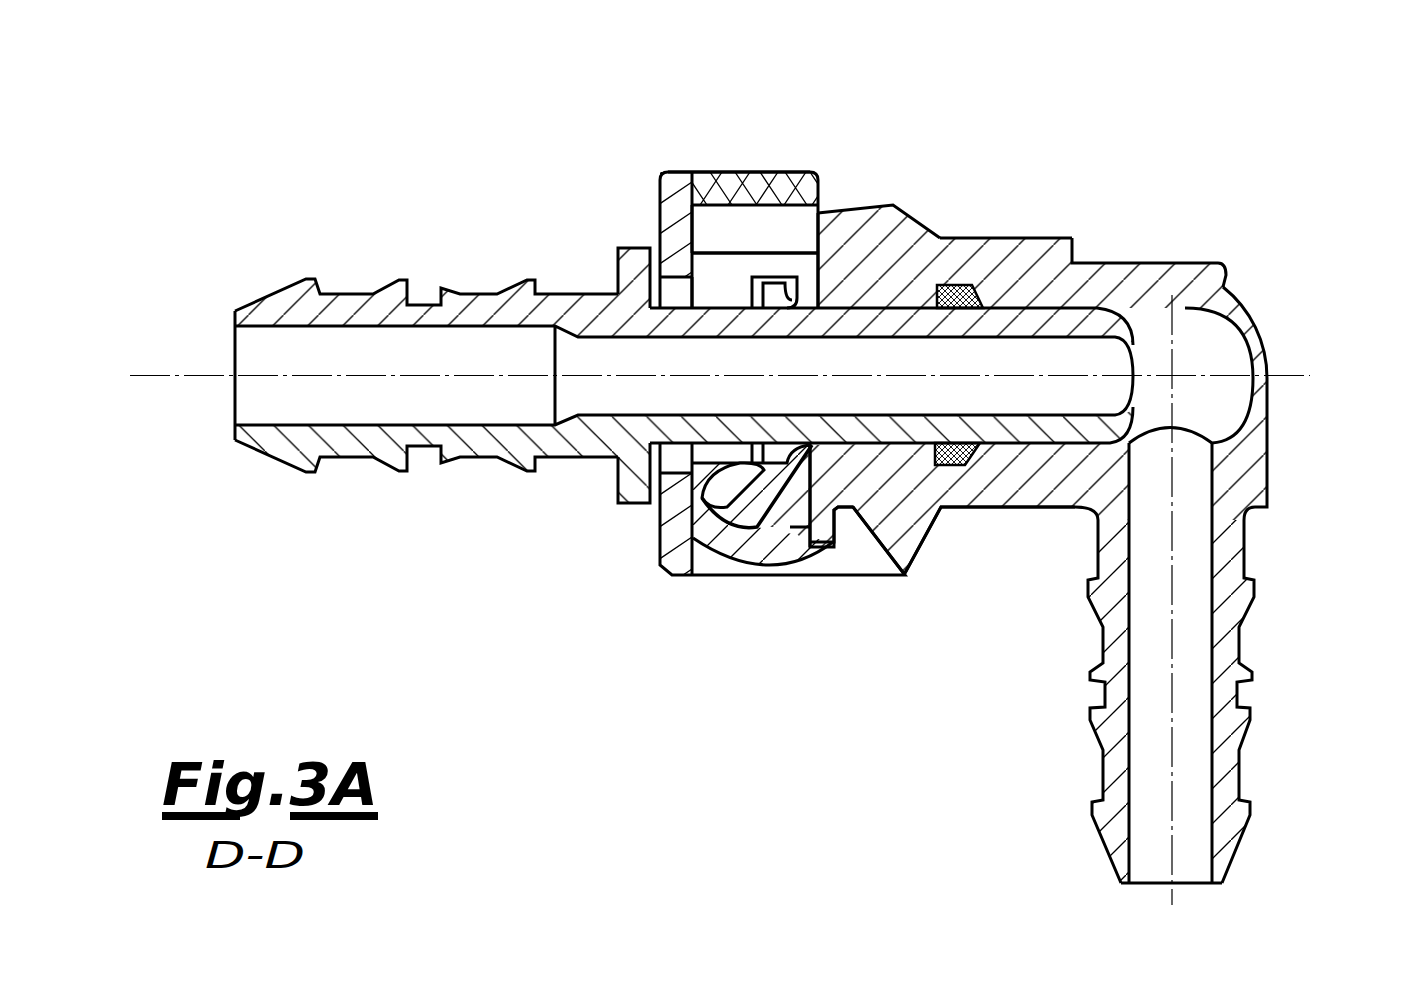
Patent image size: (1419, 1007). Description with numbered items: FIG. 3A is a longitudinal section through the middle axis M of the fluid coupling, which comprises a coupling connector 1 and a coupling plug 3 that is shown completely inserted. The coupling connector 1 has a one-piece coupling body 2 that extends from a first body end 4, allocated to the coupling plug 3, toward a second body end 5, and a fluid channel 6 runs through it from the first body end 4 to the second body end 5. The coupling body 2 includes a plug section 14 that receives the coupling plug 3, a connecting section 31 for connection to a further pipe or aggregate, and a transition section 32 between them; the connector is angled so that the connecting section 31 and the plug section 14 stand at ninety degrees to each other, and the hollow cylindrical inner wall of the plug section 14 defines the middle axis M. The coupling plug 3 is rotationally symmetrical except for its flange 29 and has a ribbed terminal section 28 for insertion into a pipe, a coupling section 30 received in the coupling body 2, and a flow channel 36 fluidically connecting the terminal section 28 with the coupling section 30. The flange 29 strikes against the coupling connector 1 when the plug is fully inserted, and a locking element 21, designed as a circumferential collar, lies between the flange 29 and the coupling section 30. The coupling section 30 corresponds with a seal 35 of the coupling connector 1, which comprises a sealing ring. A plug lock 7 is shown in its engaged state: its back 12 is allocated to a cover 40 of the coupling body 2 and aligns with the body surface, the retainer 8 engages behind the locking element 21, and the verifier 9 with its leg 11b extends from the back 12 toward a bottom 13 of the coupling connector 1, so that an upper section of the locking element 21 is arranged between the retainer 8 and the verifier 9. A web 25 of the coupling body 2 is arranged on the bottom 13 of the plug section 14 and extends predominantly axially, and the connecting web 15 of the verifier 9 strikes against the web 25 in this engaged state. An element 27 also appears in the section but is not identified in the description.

The coupling connector 1 is at (1138, 139).
The coupling body 2 is at (1075, 490).
The coupling plug 3 is at (622, 384).
The first body end 4 is at (693, 380).
The second body end 5 is at (1141, 886).
The fluid channel 6 is at (1188, 368).
The plug lock 7 is at (760, 162).
The retainer 8 is at (707, 275).
The verifier 9 is at (821, 287).
The leg 11b is at (784, 473).
The back 12 is at (731, 171).
The bottom 13 is at (727, 584).
The plug section 14 is at (1034, 234).
The connecting web 15 is at (740, 510).
The locking element 21 is at (778, 292).
The web 25 is at (763, 543).
The nut inner wall 27 is at (713, 221).
The terminal section 28 is at (365, 278).
The flange 29 is at (627, 505).
The coupling section 30 is at (883, 430).
The connecting section 31 is at (1270, 672).
The transition section 32 is at (1271, 322).
The seal 35 is at (962, 465).
The flow channel 36 is at (244, 404).
The cover 40 is at (854, 204).
The middle axis M is at (1297, 373).